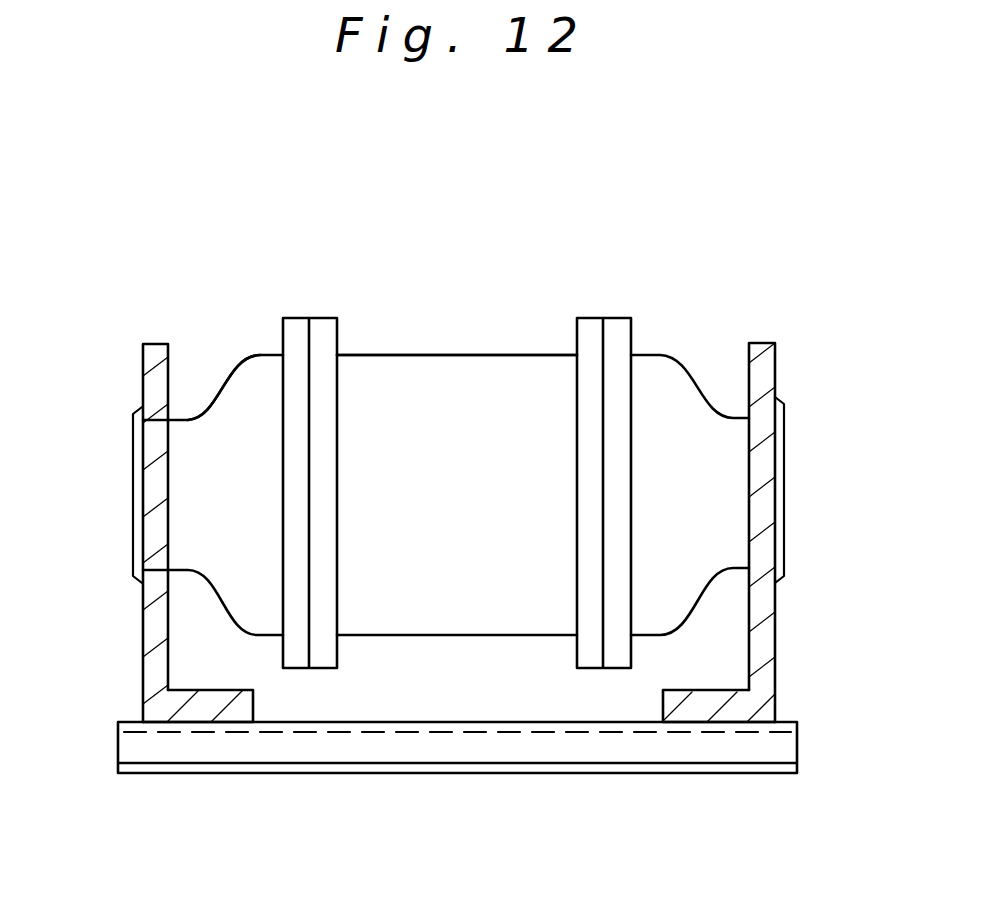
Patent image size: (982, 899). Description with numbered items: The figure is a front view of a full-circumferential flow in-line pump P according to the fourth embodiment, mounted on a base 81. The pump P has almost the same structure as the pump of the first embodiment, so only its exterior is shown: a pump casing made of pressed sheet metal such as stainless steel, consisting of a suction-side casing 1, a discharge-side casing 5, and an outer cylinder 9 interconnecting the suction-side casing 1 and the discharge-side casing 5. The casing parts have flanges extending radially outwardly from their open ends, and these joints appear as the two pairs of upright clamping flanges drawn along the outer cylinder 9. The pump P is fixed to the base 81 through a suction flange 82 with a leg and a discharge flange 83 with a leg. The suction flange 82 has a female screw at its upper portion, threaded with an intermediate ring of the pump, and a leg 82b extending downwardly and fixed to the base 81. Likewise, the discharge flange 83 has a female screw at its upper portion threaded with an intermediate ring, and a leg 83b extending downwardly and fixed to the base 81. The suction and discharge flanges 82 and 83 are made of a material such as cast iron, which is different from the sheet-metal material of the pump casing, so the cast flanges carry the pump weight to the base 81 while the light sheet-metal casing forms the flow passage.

The suction-side casing 1 is at (690, 370).
The discharge-side casing 5 is at (228, 358).
The outer cylinder 9 is at (467, 355).
The full-circumferential flow in-line pump P is at (426, 341).
The base 81 is at (426, 753).
The suction flange 82 is at (763, 380).
The leg 82b is at (765, 686).
The discharge flange 83 is at (152, 360).
The leg 83b is at (152, 667).